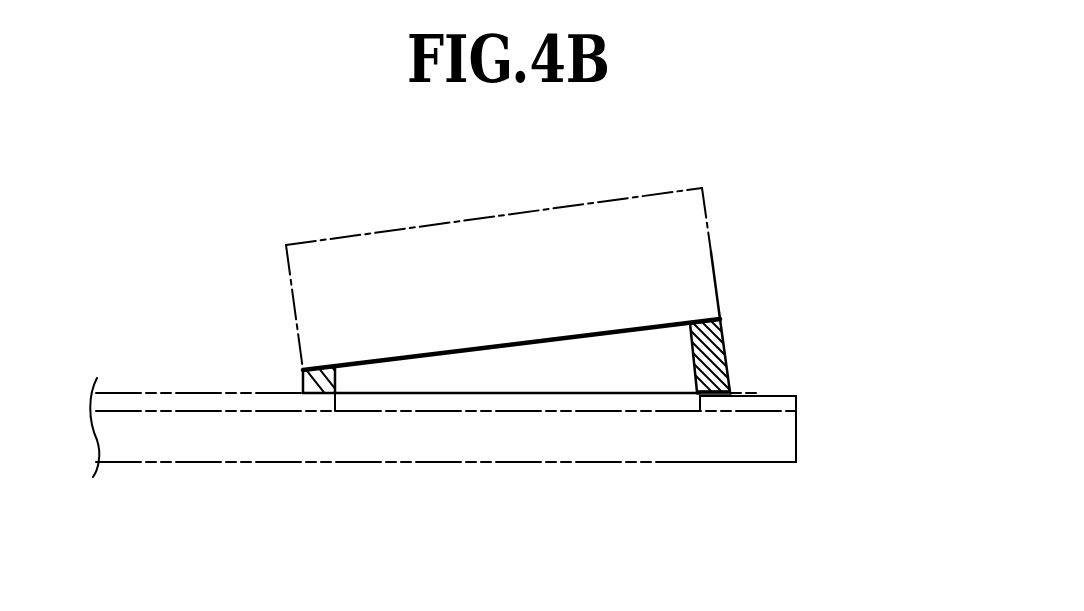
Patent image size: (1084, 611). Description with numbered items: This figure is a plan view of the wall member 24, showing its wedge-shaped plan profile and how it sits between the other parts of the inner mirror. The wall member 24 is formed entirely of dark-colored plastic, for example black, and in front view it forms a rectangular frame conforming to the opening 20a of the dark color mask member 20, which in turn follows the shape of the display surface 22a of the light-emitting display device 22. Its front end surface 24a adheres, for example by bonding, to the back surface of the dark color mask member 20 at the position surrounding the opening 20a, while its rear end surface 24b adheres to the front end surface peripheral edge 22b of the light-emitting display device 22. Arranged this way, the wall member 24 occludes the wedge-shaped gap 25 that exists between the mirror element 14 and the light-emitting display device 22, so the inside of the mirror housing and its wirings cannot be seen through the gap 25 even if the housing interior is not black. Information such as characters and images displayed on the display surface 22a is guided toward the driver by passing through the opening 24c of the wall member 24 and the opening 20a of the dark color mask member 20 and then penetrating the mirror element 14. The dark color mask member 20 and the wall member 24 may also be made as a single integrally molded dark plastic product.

The mirror element 14 is at (797, 446).
The dark color mask member 20 is at (797, 398).
The opening 20a is at (697, 398).
The light-emitting display device 22 is at (712, 252).
The display surface 22a is at (448, 358).
The front end surface peripheral edge 22b is at (723, 330).
The wall member 24 is at (727, 367).
The front end surface 24a is at (517, 393).
The rear end surface 24b is at (563, 343).
The opening 24c is at (670, 393).
The gap 25 is at (567, 372).